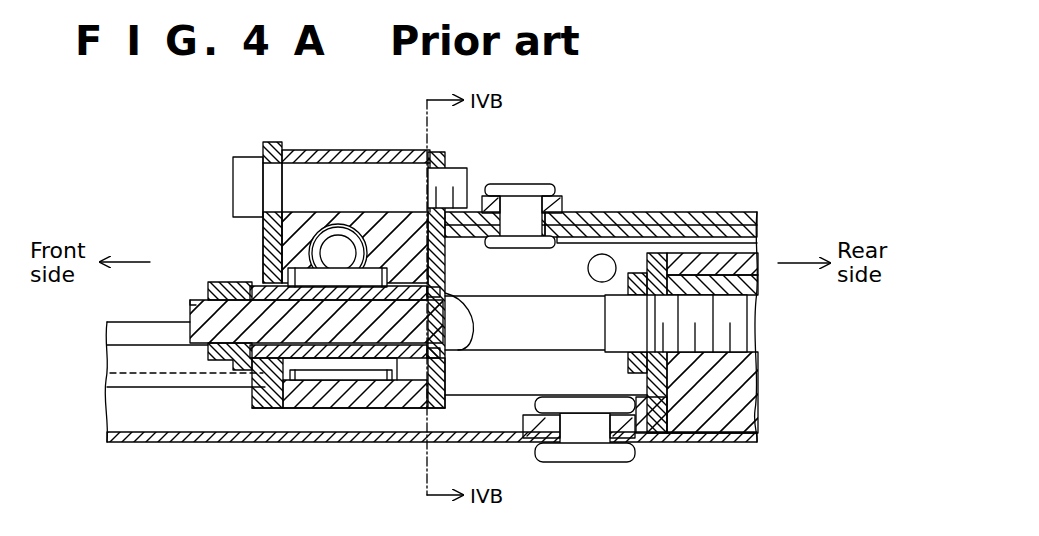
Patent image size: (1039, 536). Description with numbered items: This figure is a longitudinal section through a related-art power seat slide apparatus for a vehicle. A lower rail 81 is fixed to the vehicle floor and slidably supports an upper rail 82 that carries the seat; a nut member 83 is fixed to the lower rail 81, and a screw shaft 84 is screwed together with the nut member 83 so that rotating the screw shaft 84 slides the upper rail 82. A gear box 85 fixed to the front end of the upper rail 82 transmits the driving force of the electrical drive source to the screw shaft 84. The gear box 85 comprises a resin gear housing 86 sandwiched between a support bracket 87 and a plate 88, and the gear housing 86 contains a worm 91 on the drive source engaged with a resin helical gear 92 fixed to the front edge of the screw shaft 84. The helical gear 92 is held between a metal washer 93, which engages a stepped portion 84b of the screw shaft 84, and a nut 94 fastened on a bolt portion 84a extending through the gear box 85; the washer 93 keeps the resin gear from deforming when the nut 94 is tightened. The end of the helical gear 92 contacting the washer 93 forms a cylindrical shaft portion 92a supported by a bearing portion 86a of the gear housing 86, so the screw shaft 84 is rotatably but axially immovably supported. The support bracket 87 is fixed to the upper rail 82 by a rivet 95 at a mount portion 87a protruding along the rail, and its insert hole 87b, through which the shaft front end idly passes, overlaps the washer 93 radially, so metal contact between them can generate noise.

The lower rail 81 is at (128, 440).
The upper rail 82 is at (748, 191).
The nut member 83 is at (697, 423).
The screw shaft 84 is at (733, 302).
The bolt portion 84a is at (200, 303).
The stepped portion 84b is at (470, 278).
The gear box 85 is at (388, 150).
The gear housing 86 is at (324, 231).
The bearing portion 86a is at (445, 307).
The support bracket 87 is at (447, 160).
The mount portion 87a is at (563, 212).
The insert hole 87b is at (445, 357).
The plate 88 is at (272, 142).
The worm 91 is at (358, 217).
The helical gear 92 is at (272, 284).
The shaft portion 92a is at (373, 398).
The washer 93 is at (427, 363).
The nut 94 is at (218, 362).
The rivet 95 is at (520, 185).